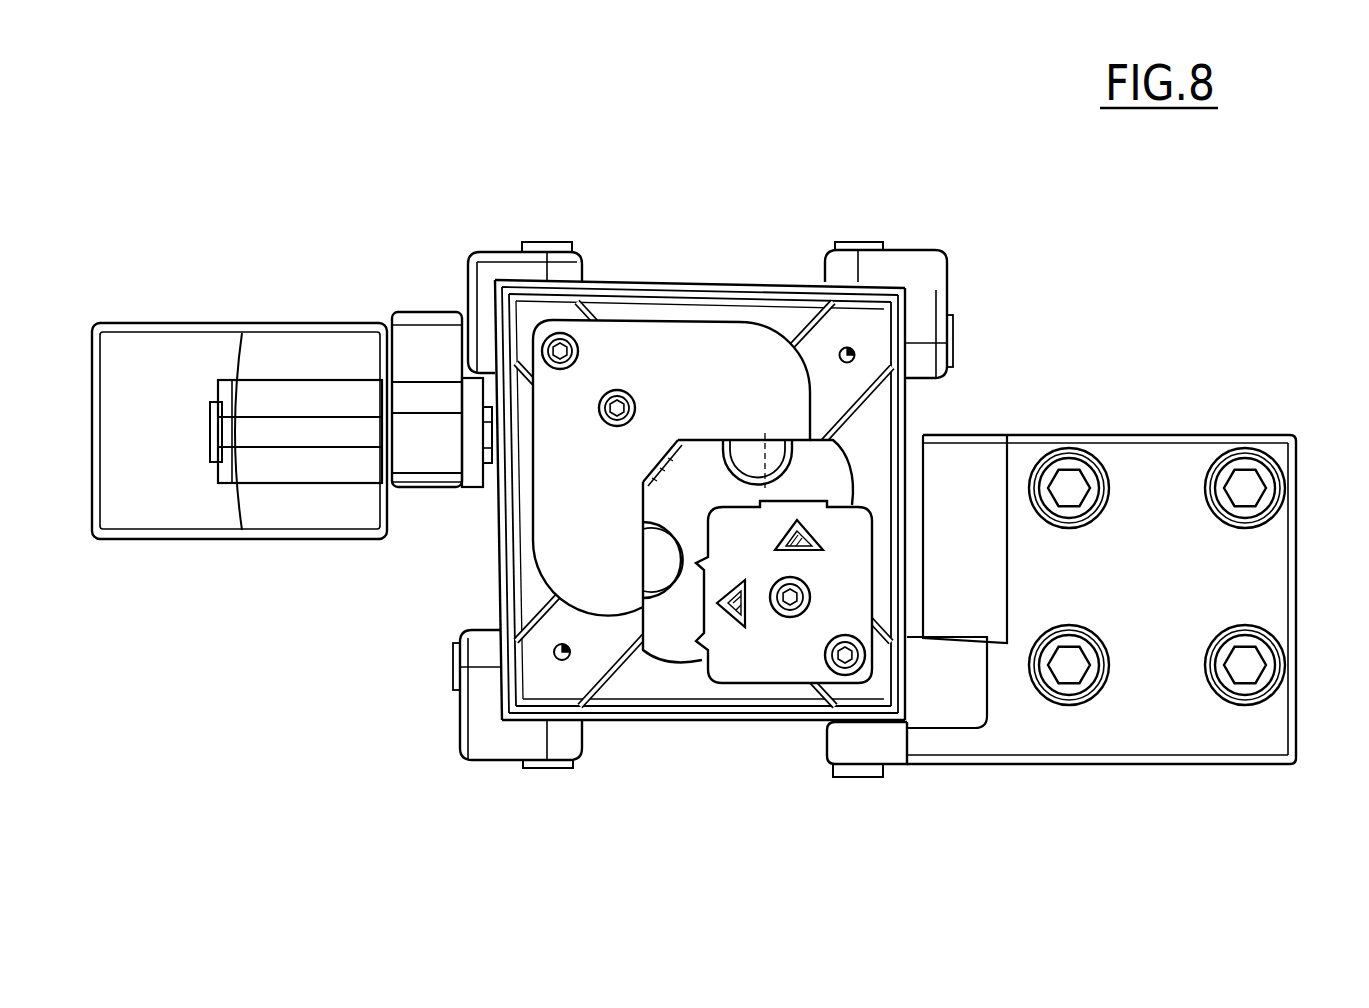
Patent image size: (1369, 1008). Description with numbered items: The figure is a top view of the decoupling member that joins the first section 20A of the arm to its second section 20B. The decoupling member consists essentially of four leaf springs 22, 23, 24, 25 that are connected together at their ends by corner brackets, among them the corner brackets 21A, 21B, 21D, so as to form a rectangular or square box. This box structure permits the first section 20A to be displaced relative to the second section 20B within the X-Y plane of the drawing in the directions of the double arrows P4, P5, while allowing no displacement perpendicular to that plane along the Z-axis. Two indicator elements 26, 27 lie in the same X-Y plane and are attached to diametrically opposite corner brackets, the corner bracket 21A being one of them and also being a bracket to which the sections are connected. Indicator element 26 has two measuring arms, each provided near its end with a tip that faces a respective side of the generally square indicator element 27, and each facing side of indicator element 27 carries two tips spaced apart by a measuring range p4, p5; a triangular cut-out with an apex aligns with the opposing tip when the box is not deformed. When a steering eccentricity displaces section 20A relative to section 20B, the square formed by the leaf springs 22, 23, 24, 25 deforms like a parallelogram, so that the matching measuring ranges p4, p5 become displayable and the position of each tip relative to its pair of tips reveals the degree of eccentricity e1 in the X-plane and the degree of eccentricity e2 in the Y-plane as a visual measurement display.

The first section 20A is at (1150, 467).
The second section 20B is at (170, 353).
The corner bracket 21A is at (508, 273).
The corner bracket 21B is at (925, 286).
The corner bracket 21D is at (501, 740).
The leaf spring 22 is at (729, 285).
The leaf spring 23 is at (908, 416).
The leaf spring 24 is at (676, 722).
The leaf spring 25 is at (497, 574).
The indicator element 26 is at (760, 391).
The indicator element 27 is at (757, 672).
The measuring range p4 is at (680, 638).
The measuring range p5 is at (765, 432).
The degree of eccentricity in the X-plane e1 is at (806, 486).
The degree of eccentricity in the Y-plane e2 is at (683, 615).
The double arrow P4 is at (1340, 510).
The double arrow P5 is at (1023, 832).